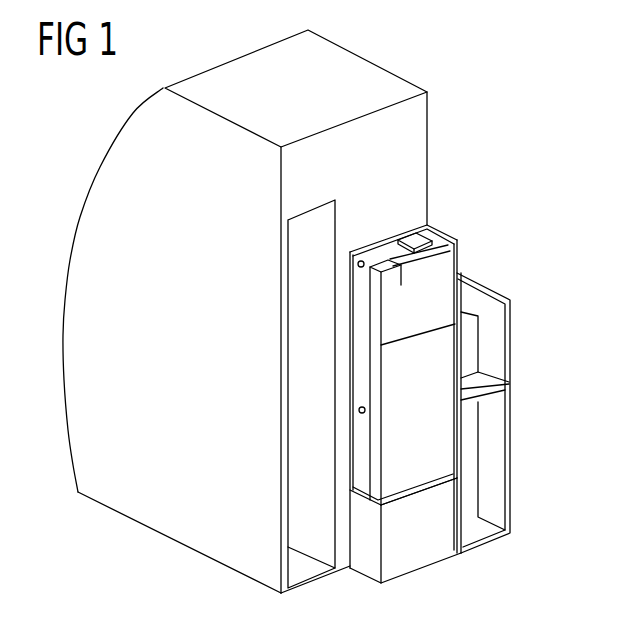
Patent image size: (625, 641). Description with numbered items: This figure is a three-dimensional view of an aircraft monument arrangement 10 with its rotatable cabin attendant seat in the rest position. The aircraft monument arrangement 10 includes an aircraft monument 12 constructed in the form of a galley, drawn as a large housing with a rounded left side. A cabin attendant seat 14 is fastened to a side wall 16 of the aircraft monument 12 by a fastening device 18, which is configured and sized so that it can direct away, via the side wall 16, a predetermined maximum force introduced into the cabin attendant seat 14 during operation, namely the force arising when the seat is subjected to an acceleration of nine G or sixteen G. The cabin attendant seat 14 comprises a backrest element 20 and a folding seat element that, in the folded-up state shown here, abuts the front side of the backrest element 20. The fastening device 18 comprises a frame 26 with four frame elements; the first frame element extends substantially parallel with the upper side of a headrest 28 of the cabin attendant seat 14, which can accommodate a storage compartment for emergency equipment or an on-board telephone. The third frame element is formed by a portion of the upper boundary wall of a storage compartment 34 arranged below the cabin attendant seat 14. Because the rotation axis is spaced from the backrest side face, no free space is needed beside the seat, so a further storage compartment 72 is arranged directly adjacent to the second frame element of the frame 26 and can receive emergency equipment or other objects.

The aircraft monument arrangement 10 is at (460, 97).
The aircraft monument 12 is at (364, 82).
The cabin attendant seat 14 is at (456, 258).
The side wall 16 is at (413, 142).
The fastening device 18 is at (477, 273).
The backrest element 20 is at (410, 463).
The frame 26 is at (443, 230).
The headrest 28 is at (421, 338).
The storage compartment 34 is at (403, 557).
The storage compartment 72 is at (490, 450).